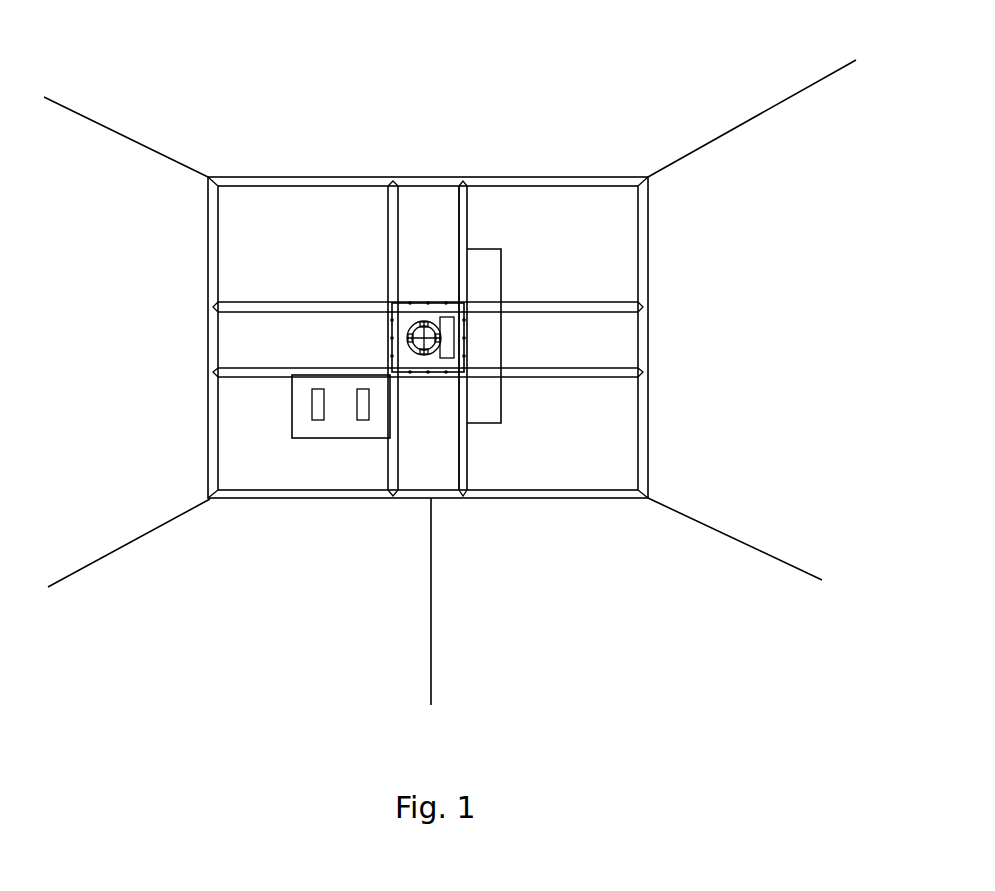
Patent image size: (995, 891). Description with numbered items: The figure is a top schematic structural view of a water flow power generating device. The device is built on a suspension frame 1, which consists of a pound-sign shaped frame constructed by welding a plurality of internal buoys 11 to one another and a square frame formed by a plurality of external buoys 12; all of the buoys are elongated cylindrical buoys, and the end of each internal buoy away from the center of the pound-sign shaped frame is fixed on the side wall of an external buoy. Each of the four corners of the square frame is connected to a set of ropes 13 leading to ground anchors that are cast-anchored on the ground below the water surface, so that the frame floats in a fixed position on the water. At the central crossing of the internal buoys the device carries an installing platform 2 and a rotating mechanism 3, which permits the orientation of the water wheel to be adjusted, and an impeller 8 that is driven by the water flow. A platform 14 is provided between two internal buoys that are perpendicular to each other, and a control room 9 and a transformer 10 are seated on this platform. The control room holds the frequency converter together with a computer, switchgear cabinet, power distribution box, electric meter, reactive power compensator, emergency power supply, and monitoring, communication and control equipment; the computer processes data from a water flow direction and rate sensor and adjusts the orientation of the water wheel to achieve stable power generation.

The suspension frame 1 is at (653, 300).
The installing platform 2 is at (404, 318).
The rotating mechanism 3 is at (420, 300).
The impeller 8 is at (487, 395).
The control room 9 is at (318, 400).
The transformer 10 is at (364, 400).
The internal buoys 11 is at (462, 230).
The external buoys 12 is at (582, 178).
The ropes 13 is at (730, 129).
The platform 14 is at (340, 427).